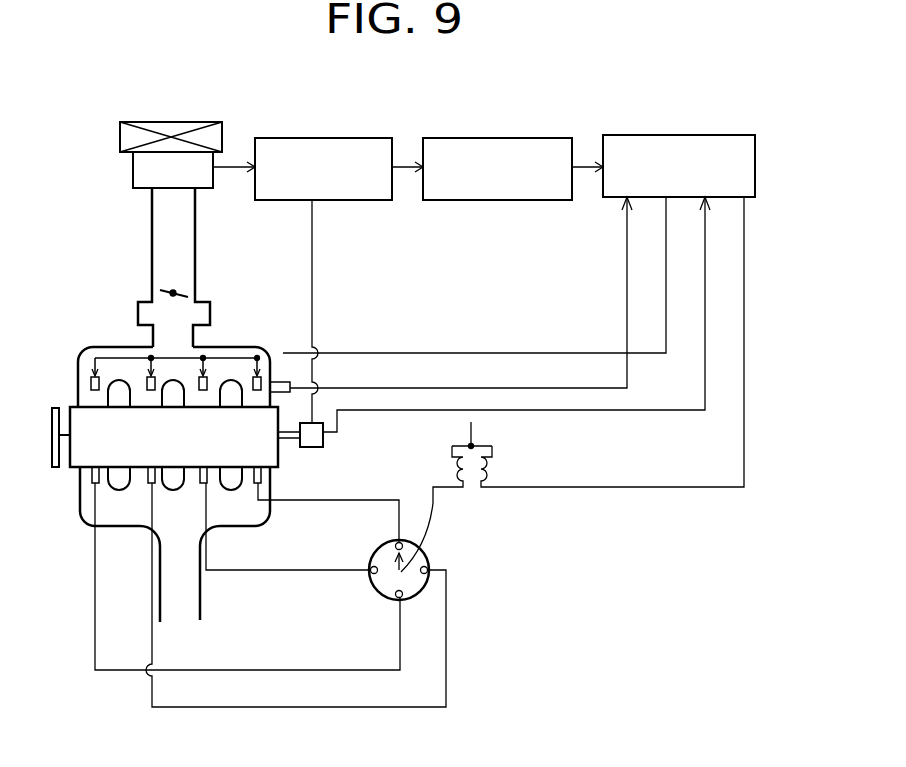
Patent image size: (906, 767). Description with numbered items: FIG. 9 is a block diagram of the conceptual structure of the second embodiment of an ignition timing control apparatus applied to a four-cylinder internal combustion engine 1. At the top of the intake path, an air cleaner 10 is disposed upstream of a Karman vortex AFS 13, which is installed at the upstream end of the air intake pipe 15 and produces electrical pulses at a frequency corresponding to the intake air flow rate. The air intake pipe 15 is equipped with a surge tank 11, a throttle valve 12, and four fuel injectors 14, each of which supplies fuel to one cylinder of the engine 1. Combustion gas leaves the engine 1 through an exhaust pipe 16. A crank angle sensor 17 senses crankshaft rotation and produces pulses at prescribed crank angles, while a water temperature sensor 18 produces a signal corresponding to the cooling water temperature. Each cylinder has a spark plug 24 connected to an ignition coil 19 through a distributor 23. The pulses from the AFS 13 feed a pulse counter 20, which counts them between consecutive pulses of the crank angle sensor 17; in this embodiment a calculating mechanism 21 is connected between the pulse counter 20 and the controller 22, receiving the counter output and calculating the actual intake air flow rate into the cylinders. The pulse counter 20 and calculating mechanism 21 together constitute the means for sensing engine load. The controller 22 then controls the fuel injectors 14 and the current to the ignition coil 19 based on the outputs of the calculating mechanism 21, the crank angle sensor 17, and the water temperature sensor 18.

The internal combustion engine 1 is at (278, 456).
The air cleaner 10 is at (120, 136).
The surge tank 11 is at (138, 318).
The throttle valve 12 is at (182, 291).
The Karman vortex AFS 13 is at (133, 177).
The fuel injectors 14 is at (90, 387).
The air intake pipe 15 is at (86, 349).
The exhaust pipe 16 is at (272, 520).
The crank angle sensor 17 is at (316, 438).
The water temperature sensor 18 is at (283, 382).
The ignition coil 19 is at (495, 457).
The pulse counter 20 is at (334, 138).
The calculating mechanism 21 is at (504, 138).
The controller 22 is at (670, 135).
The distributor 23 is at (429, 552).
The spark plug 24 is at (92, 477).